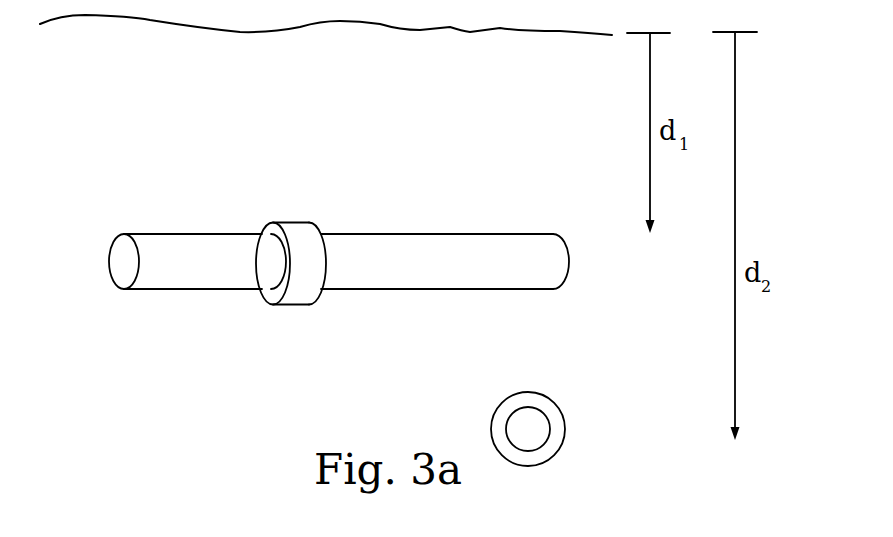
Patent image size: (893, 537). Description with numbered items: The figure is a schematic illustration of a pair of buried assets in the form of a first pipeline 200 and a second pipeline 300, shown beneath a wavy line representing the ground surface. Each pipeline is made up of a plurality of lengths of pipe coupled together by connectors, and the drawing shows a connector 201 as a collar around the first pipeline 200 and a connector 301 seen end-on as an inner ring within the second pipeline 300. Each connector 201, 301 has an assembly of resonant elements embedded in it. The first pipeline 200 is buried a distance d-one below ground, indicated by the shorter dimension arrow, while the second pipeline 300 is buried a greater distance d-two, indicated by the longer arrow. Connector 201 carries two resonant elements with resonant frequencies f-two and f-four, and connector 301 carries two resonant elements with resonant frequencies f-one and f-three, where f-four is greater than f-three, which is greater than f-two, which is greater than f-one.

The first pipeline 200 is at (480, 221).
The connector 201 is at (298, 232).
The second pipeline 300 is at (582, 422).
The connector 301 is at (500, 430).